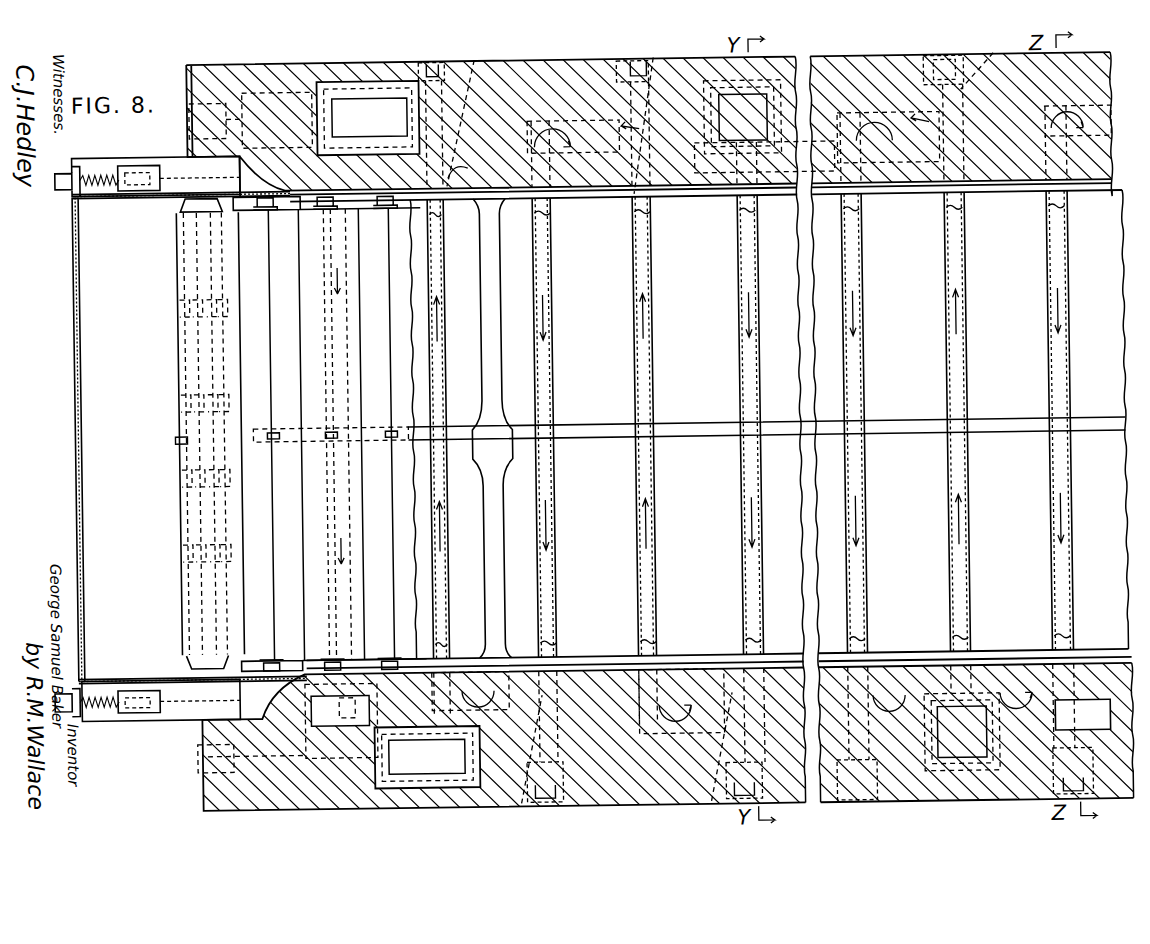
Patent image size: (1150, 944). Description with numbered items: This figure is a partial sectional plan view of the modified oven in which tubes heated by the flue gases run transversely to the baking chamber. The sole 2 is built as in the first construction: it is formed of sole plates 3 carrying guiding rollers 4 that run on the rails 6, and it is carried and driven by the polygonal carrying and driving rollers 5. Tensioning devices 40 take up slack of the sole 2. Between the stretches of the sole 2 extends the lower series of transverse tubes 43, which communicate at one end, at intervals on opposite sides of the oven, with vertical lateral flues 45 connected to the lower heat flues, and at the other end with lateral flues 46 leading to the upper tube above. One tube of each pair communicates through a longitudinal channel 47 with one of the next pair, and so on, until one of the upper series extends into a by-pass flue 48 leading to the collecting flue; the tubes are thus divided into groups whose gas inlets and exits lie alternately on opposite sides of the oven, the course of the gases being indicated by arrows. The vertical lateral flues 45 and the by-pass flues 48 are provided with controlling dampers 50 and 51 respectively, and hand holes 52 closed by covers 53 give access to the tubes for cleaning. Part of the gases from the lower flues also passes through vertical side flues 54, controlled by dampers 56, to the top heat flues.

The sole 2 is at (176, 242).
The sole plates 3 is at (317, 434).
The guiding rollers 4 is at (325, 208).
The polygonal carrying and driving rollers 5 is at (196, 374).
The rails 6 is at (244, 206).
The tensioning devices 40 is at (114, 182).
The lower series of transverse tubes 43 is at (552, 552).
The vertical lateral flues 45 is at (712, 160).
The lateral flues 46 is at (1082, 714).
The longitudinal channel 47 is at (588, 134).
The by-pass flue 48 is at (325, 720).
The controlling damper 50 is at (743, 117).
The controlling damper 51 is at (340, 722).
The hand holes 52 is at (460, 95).
The covers 53 is at (435, 67).
The vertical side flues 54 is at (399, 434).
The dampers 56 is at (386, 146).